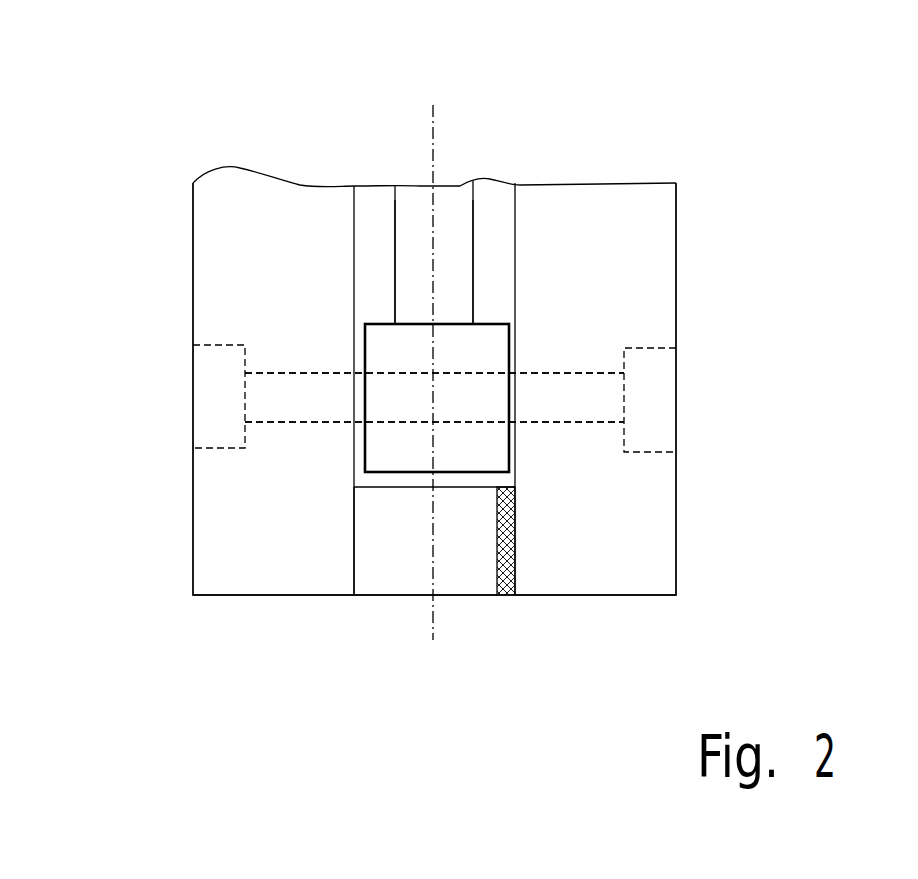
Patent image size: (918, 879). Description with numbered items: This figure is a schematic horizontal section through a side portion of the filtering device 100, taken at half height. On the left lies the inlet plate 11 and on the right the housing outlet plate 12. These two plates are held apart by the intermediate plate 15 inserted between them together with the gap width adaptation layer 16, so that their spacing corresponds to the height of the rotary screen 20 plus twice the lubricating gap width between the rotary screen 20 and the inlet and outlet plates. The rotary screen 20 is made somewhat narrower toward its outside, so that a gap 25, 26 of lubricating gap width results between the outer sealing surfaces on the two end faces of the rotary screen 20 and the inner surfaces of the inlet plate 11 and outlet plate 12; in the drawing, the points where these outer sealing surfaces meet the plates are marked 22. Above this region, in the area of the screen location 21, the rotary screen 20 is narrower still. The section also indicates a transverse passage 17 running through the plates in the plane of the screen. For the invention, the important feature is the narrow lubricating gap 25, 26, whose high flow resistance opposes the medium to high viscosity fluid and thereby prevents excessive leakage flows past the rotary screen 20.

The valve assembly 100 is at (125, 88).
The inlet plate 11 is at (262, 188).
The housing outlet plate 12 is at (602, 190).
The rotary screen 20 is at (410, 187).
The screen location 21 is at (410, 267).
The sealing point 22 is at (363, 352).
The transverse bore 17 is at (270, 407).
The lubricating gap 26 is at (516, 463).
The lubricating gap 25 is at (355, 530).
The intermediate plate 15 is at (408, 580).
The gap width adaptation layer 16 is at (505, 595).